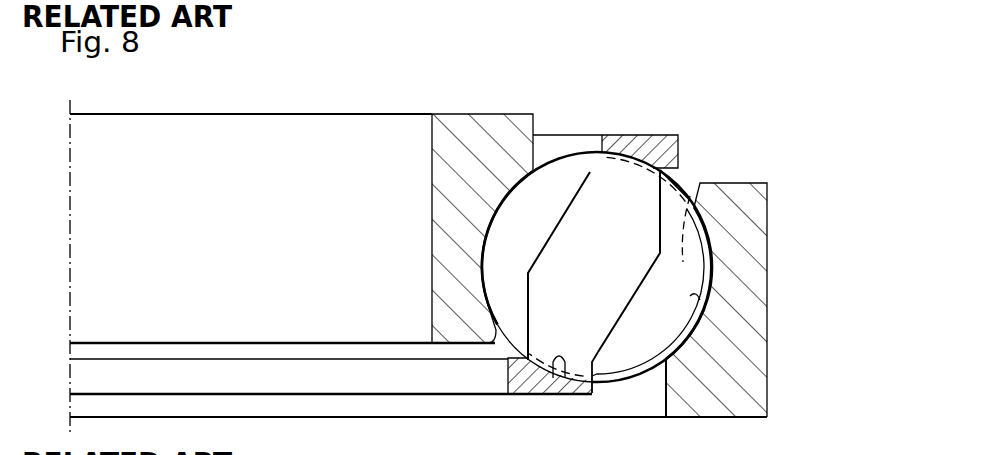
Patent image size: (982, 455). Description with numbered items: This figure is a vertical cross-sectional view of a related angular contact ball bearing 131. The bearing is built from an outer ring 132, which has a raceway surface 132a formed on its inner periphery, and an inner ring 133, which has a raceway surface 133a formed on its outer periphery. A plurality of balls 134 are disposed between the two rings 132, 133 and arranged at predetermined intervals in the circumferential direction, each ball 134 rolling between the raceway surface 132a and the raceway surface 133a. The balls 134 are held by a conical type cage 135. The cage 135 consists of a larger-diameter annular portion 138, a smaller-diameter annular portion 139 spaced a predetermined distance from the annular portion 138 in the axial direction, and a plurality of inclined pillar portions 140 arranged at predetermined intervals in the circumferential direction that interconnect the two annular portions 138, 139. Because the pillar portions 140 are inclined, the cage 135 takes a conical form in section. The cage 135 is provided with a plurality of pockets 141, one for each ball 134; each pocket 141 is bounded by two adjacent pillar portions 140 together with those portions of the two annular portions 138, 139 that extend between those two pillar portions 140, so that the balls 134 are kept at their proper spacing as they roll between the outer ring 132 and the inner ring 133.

The angular contact ball bearing 131 is at (692, 112).
The outer ring 132 is at (767, 369).
The raceway surface 132a is at (703, 318).
The inner ring 133 is at (432, 181).
The raceway surface 133a is at (490, 245).
The balls 134 is at (693, 271).
The conical type cage 135 is at (587, 170).
The larger-diameter annular portion 138 is at (678, 150).
The smaller-diameter annular portion 139 is at (523, 380).
The inclined pillar portions 140 is at (600, 305).
The pockets 141 is at (563, 365).